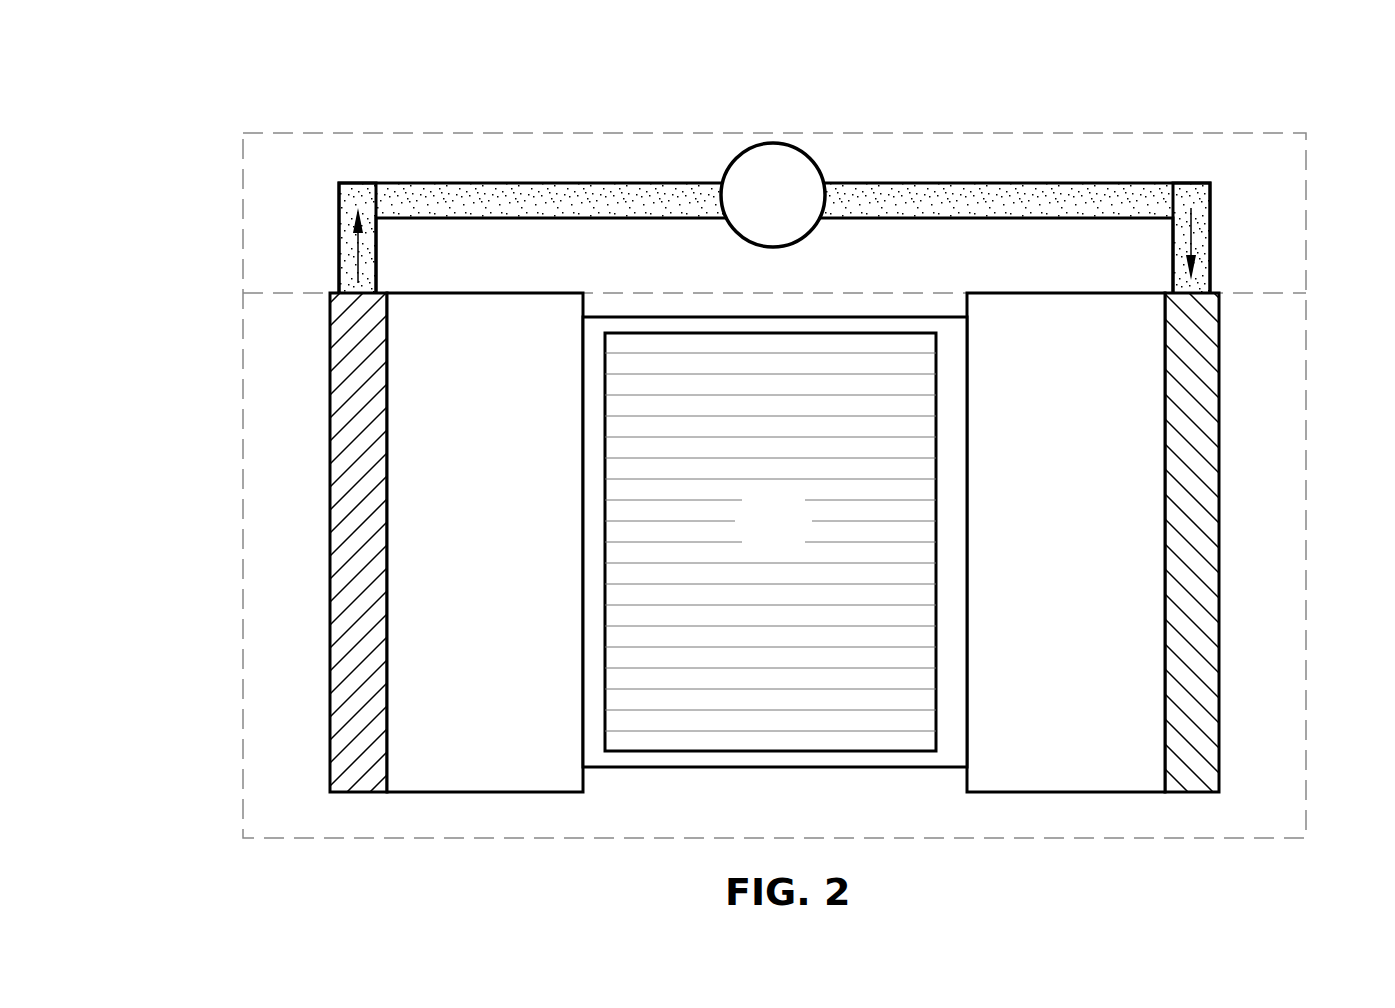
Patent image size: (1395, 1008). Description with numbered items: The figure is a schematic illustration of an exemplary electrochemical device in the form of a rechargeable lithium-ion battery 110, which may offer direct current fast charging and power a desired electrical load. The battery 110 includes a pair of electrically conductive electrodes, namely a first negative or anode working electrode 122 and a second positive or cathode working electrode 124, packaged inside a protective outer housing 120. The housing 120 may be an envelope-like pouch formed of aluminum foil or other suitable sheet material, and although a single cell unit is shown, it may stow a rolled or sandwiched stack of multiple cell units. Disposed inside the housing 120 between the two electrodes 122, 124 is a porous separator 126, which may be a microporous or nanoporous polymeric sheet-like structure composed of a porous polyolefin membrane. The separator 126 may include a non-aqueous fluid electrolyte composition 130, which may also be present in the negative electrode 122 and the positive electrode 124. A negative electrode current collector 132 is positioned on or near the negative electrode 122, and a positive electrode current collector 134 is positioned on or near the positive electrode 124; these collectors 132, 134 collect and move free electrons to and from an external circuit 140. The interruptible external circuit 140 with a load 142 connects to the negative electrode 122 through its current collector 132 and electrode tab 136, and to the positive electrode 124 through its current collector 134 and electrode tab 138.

The lithium-ion battery 110 is at (140, 86).
The protective outer housing 120 is at (232, 351).
The first working electrode 122 is at (505, 524).
The second working electrode 124 is at (1093, 524).
The porous separator 126 is at (630, 768).
The non-aqueous fluid electrolyte composition 130 is at (798, 537).
The negative electrode current collector 132 is at (330, 512).
The positive electrode current collector 134 is at (1220, 512).
The electrode tab 136 is at (337, 292).
The electrode tab 138 is at (1212, 292).
The external circuit 140 is at (388, 126).
The load 142 is at (747, 210).